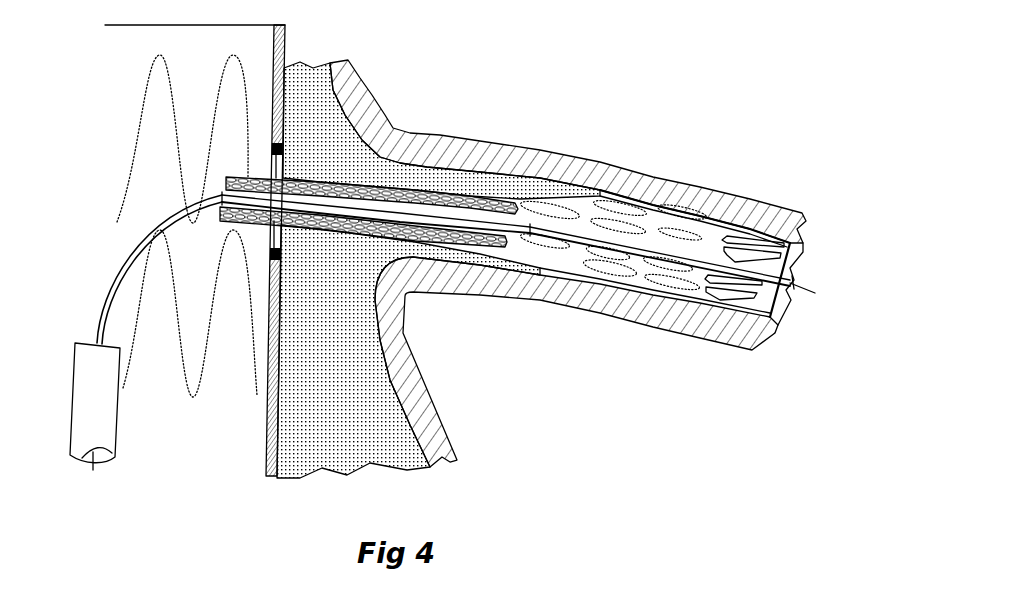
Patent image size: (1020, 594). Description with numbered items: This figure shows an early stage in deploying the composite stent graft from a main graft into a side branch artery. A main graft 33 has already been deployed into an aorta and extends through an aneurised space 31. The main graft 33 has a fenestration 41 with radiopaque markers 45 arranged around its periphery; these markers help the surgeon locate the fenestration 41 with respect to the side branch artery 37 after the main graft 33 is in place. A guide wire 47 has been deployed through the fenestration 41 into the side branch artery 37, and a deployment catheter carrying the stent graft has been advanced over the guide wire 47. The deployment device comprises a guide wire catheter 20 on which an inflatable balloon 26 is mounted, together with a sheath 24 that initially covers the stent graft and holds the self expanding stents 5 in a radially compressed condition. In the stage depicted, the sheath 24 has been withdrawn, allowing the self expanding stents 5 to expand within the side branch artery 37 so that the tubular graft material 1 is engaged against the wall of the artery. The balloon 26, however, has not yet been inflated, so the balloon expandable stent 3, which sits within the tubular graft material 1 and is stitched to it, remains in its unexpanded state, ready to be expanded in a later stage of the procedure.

The tubular graft material 1 is at (592, 282).
The balloon expandable stent 3 is at (413, 193).
The self expanding stents 5 is at (663, 280).
The guide wire catheter 20 is at (113, 276).
The sheath 24 is at (80, 400).
The inflatable balloon 26 is at (445, 217).
The aneurised space 31 is at (367, 420).
The main graft 33 is at (267, 415).
The side branch artery 37 is at (683, 190).
The fenestration 41 is at (267, 233).
The radiopaque markers 45 is at (281, 147).
The guide wire 47 is at (803, 290).